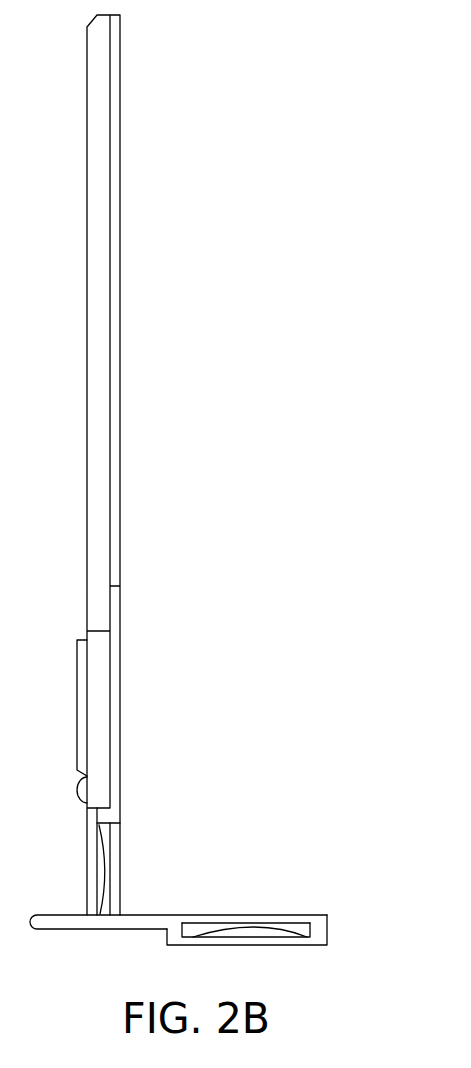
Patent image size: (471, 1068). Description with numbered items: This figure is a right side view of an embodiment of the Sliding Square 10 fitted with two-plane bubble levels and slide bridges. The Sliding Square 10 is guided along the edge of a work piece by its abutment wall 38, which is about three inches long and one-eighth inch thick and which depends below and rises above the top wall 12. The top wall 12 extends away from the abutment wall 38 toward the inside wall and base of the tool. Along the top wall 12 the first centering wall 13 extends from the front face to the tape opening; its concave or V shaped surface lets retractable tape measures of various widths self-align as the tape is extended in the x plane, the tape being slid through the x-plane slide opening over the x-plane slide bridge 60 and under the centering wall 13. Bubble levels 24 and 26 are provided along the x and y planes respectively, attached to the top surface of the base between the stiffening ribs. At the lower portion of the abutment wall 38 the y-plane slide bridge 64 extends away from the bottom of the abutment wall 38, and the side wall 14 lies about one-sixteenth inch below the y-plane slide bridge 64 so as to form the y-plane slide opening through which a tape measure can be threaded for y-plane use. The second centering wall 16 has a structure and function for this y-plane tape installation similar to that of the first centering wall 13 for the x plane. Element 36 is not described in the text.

The Sliding Square 10 is at (130, 427).
The top wall 12 is at (82, 862).
The first centering wall 13 is at (107, 875).
The side wall 14 is at (192, 945).
The second centering wall 16 is at (255, 929).
The bubble level 24 is at (77, 788).
The bubble level 26 is at (78, 641).
The base arm 36 is at (35, 913).
The abutment wall 38 is at (181, 916).
The x-plane slide bridge 60 is at (115, 848).
The y-plane slide bridge 64 is at (262, 916).